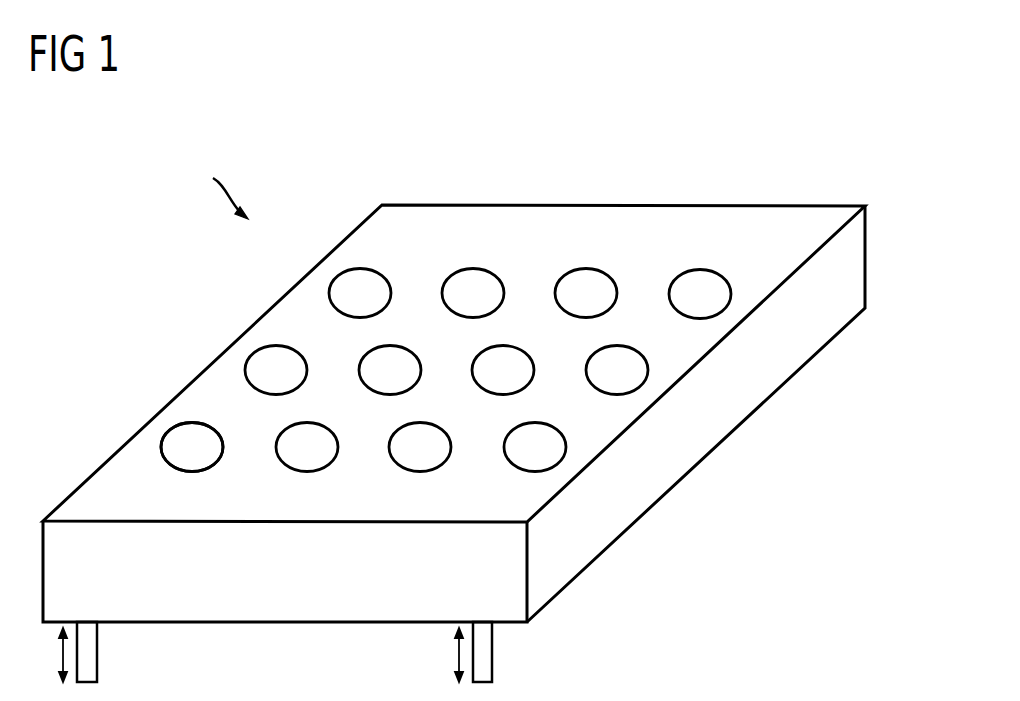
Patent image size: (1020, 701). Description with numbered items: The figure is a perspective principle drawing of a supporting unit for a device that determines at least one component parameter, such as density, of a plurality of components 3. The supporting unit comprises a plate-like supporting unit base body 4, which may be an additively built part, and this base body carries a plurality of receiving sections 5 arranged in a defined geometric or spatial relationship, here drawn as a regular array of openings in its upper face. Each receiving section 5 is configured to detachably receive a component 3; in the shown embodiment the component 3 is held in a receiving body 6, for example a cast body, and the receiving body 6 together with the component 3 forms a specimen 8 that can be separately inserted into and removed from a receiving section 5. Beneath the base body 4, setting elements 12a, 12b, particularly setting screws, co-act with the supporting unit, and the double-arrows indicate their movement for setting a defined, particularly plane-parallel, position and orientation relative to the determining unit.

The component 3 is at (439, 370).
The plate-like supporting unit base body 4 is at (112, 452).
The receiving section 5 is at (183, 419).
The receiving body 6 is at (439, 370).
The specimen 8 is at (197, 437).
The setting element 12a is at (97, 655).
The setting element 12b is at (492, 655).